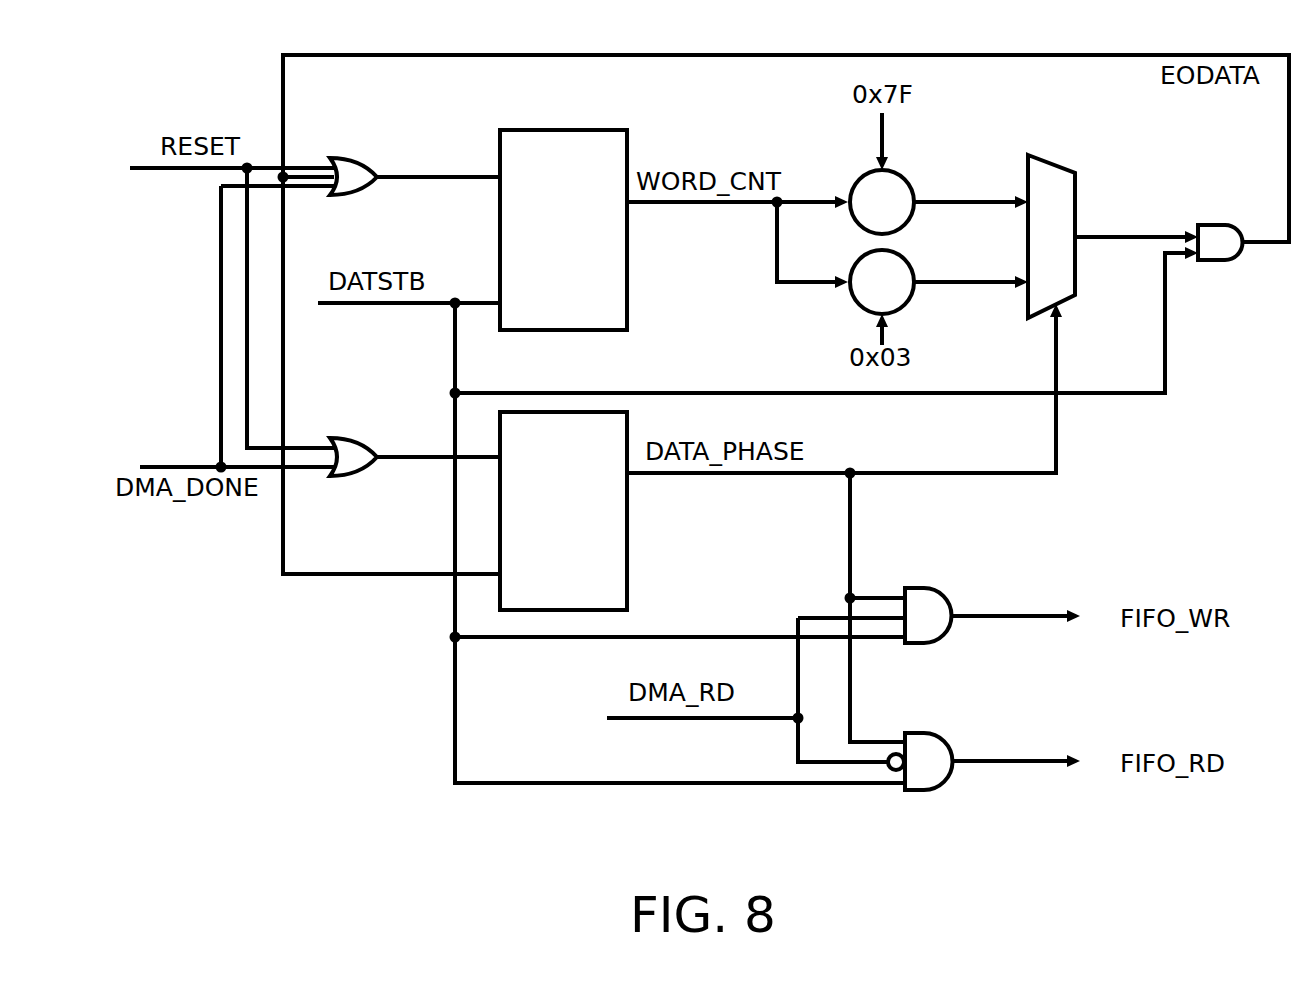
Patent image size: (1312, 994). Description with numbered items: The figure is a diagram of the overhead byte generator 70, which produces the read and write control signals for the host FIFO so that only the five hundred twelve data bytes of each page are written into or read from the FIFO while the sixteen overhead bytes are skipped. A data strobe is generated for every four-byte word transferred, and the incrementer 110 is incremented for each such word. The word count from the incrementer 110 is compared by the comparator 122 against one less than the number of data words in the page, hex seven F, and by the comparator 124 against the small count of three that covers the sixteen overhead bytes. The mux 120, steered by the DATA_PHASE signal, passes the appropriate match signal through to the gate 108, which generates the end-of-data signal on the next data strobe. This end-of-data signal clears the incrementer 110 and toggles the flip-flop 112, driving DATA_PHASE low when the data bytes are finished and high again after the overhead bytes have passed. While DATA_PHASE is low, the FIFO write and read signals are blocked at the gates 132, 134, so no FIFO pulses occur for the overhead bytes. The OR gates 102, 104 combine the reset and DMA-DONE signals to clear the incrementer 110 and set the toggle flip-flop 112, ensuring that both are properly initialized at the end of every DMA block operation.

The overhead byte generator 70 is at (710, 467).
The OR gate 102 is at (352, 197).
The OR gate 104 is at (352, 478).
The gate 108 is at (1226, 262).
The incrementer 110 is at (563, 230).
The toggle flip-flop 112 is at (563, 511).
The mux 120 is at (1063, 299).
The comparator 122 is at (905, 170).
The comparator 124 is at (905, 250).
The gate 132 is at (930, 645).
The gate 134 is at (930, 792).